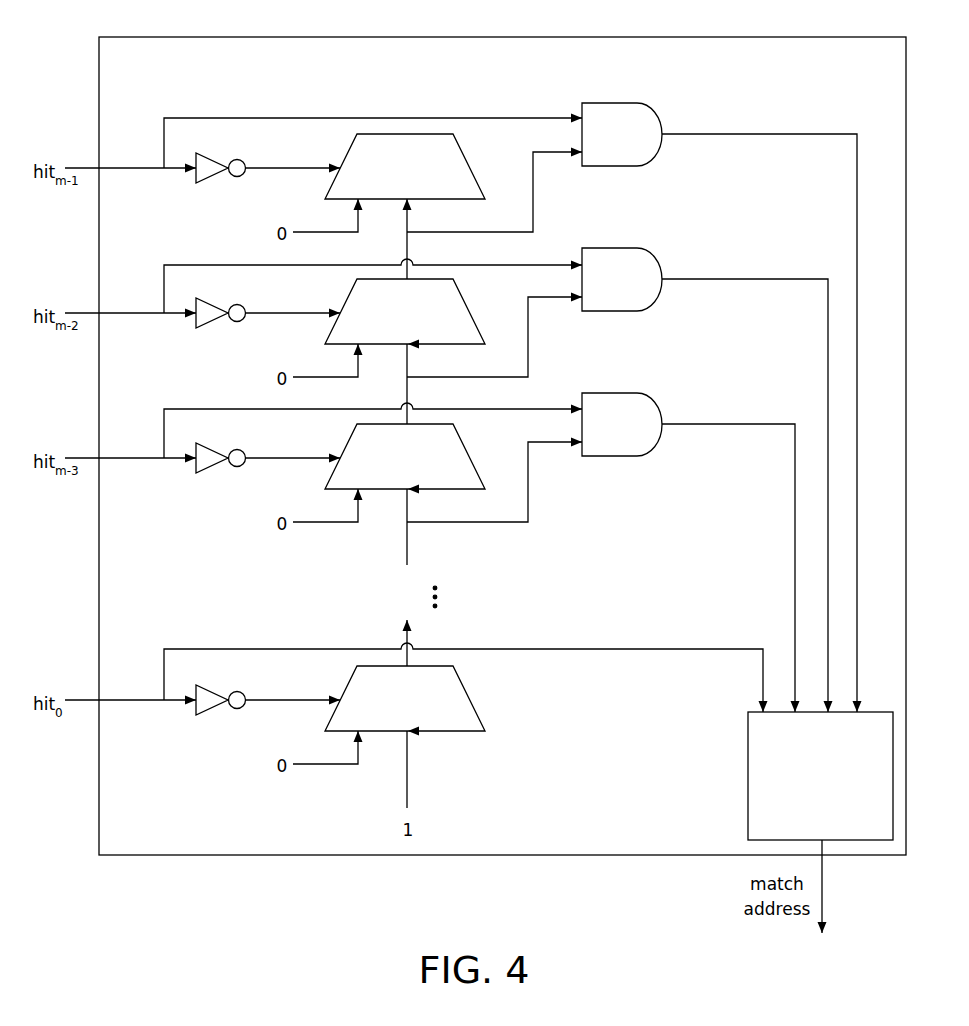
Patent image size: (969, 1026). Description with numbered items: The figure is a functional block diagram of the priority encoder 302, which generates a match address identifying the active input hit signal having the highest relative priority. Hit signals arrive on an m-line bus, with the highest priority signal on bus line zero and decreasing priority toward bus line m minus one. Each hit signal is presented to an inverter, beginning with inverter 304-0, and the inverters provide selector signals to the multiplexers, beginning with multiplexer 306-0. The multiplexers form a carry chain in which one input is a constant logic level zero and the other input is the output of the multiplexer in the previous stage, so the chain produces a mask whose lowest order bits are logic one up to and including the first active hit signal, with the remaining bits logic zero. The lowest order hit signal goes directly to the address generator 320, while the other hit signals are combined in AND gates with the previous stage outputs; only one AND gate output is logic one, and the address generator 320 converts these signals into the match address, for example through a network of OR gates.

The priority encoder 302 is at (645, 37).
The inverter 304-0 is at (197, 685).
The multiplexer 306-0 is at (477, 705).
The address generator 320 is at (748, 777).